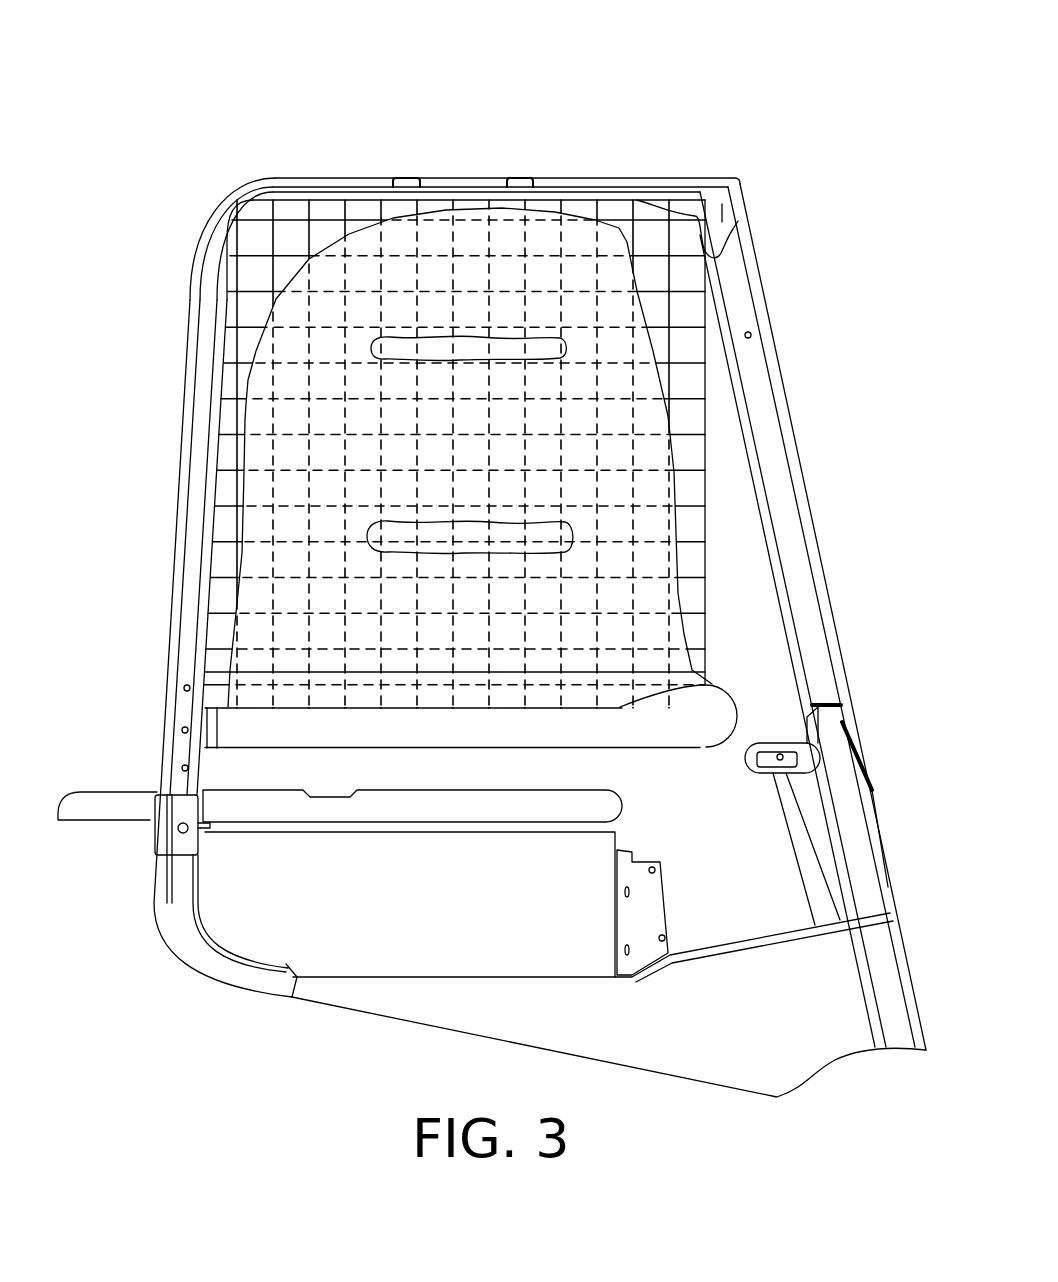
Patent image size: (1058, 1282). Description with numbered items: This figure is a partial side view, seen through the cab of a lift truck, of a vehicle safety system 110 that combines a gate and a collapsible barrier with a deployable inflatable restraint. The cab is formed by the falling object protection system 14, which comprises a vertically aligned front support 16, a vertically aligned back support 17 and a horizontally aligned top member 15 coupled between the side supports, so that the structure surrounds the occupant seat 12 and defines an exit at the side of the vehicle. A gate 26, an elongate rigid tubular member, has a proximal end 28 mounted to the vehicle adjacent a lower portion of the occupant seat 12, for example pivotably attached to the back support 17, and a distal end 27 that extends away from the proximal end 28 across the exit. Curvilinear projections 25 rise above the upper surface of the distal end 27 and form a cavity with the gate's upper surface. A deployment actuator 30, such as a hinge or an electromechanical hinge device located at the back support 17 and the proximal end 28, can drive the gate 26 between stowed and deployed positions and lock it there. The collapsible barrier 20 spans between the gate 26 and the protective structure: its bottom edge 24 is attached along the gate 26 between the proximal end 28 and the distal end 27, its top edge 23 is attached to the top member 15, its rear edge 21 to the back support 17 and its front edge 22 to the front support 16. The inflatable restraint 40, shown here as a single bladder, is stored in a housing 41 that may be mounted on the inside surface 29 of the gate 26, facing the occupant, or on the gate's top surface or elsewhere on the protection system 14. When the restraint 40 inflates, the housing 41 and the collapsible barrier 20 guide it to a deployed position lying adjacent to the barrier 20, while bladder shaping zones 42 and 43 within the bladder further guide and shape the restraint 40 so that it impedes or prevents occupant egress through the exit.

The vehicle safety system 110 is at (794, 112).
The falling object protection system 14 is at (476, 146).
The top member 15 is at (370, 182).
The front support 16 is at (757, 285).
The back support 17 is at (183, 455).
The collapsible barrier 20 is at (693, 382).
The rear edge 21 is at (205, 527).
The front edge 22 is at (707, 458).
The top edge 23 is at (580, 193).
The bottom edge 24 is at (437, 695).
The projection 25 is at (737, 712).
The gate 26 is at (320, 750).
The distal end 27 is at (708, 748).
The proximal end 28 is at (216, 730).
The inside surface 29 is at (657, 730).
The deployment actuator 30 is at (203, 735).
The inflatable restraint 40 is at (682, 600).
The housing 41 is at (705, 679).
The bladder shaping zone 42 is at (367, 532).
The bladder shaping zone 43 is at (371, 348).
The occupant seat 12 is at (502, 805).